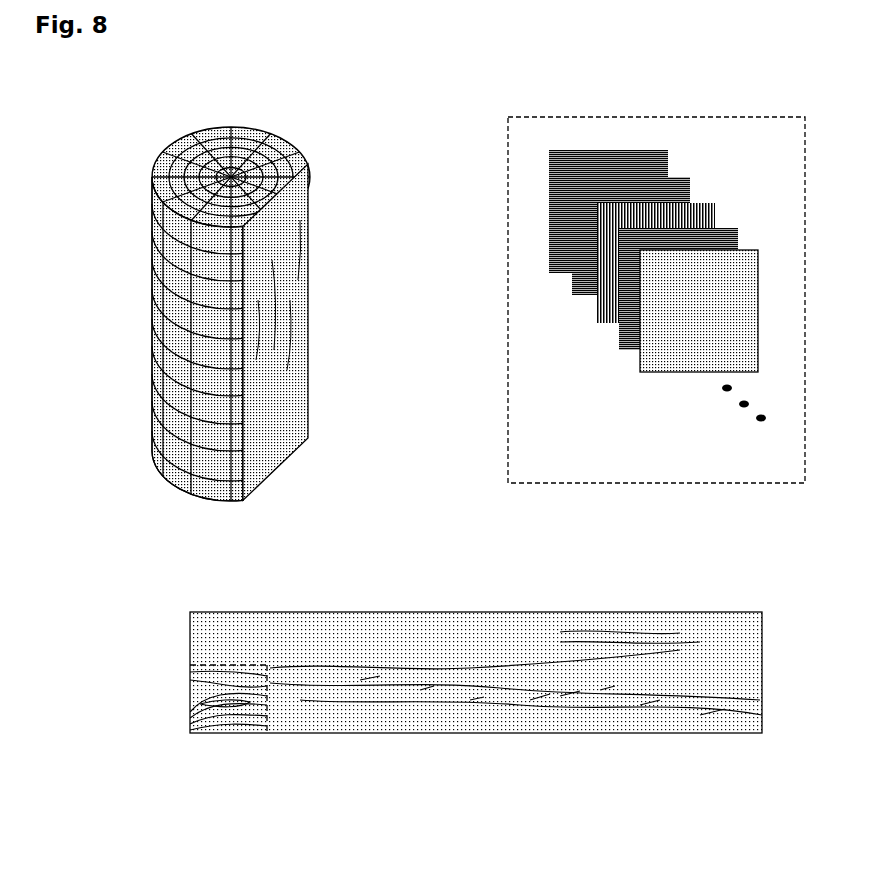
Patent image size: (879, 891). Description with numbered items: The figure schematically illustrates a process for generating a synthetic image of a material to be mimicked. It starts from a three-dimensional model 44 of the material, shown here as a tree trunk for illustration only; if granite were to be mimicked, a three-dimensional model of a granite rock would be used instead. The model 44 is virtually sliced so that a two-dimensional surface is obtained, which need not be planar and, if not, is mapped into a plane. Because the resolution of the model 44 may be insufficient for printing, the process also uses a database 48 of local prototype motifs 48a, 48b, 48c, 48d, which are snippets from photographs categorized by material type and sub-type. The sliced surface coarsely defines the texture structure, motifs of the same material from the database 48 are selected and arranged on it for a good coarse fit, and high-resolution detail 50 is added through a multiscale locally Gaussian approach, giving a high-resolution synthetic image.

The 3D model 44 is at (264, 286).
The database 48 is at (628, 300).
The local prototype motif 48a is at (668, 157).
The local prototype motif 48b is at (690, 190).
The local prototype motif 48c is at (598, 330).
The local prototype motif 48d is at (626, 355).
The high-resolution detail 50 is at (230, 733).